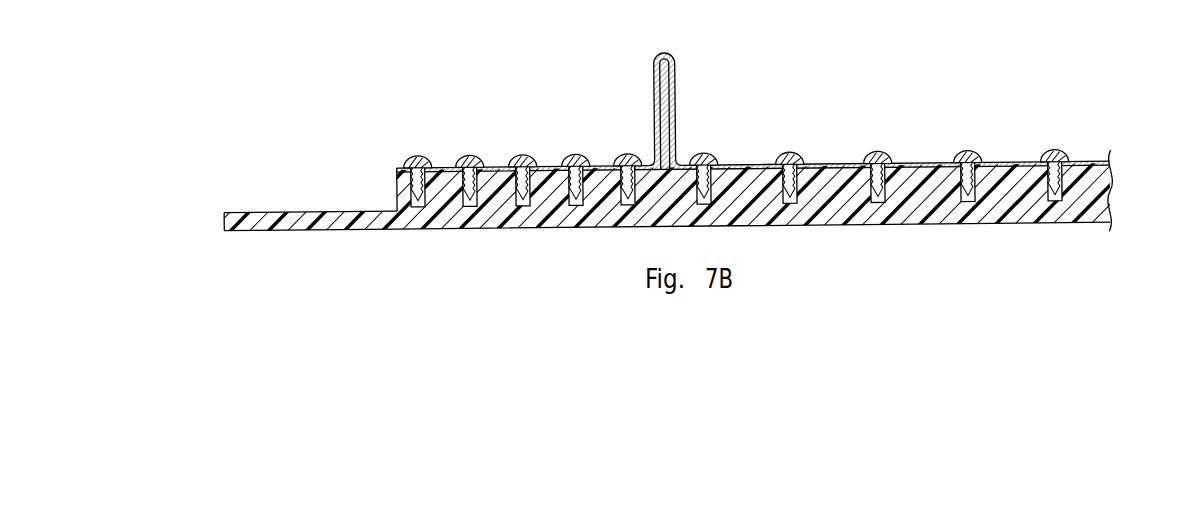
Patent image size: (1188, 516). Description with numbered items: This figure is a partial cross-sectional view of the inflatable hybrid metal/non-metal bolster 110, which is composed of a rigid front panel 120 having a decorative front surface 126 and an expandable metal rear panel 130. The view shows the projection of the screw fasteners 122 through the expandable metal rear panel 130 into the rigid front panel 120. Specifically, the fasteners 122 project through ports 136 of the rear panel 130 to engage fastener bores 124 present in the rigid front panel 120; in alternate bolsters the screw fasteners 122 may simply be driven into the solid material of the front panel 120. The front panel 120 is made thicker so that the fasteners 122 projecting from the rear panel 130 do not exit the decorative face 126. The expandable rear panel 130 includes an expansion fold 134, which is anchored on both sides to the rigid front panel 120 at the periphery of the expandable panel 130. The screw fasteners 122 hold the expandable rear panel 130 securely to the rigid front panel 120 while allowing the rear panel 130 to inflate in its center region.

The inflatable hybrid bolster 110 is at (685, 143).
The rigid front panel 120 is at (295, 227).
The screw fasteners 122 is at (526, 157).
The fastener bores 124 is at (418, 208).
The decorative front surface 126 is at (940, 230).
The expandable metal rear panel 130 is at (397, 168).
The expansion fold 134 is at (676, 65).
The ports 136 is at (443, 168).